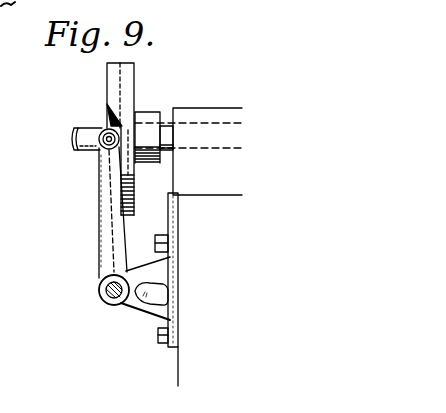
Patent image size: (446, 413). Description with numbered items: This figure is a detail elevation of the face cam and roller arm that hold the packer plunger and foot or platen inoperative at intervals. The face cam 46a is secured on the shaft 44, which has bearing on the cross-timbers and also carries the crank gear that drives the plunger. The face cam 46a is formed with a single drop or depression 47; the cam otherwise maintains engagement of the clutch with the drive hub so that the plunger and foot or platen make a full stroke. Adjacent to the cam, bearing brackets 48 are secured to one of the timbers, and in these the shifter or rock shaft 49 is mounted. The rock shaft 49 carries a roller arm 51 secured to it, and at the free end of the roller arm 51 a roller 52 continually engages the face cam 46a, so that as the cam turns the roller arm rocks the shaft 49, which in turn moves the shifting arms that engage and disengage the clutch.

The face cam 46a is at (121, 88).
The drop or depression 47 is at (108, 118).
The shaft 44 is at (86, 149).
The roller 52 is at (99, 134).
The roller arm 51 is at (103, 226).
The shifter or rock shaft 49 is at (100, 297).
The bearing brackets 48 is at (150, 309).